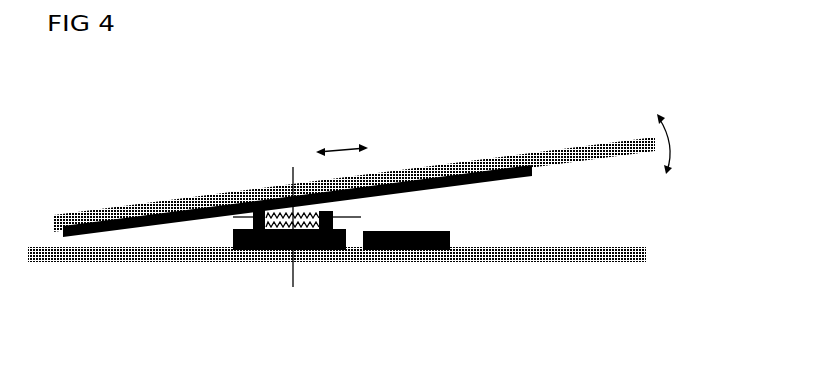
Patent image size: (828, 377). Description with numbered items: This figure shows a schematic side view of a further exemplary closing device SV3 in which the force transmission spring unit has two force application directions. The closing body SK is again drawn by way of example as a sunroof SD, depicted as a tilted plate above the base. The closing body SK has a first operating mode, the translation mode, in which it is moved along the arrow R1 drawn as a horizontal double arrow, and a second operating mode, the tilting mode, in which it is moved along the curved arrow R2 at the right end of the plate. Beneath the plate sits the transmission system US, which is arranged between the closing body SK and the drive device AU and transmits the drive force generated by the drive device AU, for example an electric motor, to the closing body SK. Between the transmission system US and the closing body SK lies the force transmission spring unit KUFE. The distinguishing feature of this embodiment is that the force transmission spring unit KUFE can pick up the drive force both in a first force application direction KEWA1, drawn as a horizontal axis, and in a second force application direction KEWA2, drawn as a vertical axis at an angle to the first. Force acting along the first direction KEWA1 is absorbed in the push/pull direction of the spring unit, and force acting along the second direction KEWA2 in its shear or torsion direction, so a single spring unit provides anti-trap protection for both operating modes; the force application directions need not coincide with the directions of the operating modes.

The closing device SV3 is at (481, 108).
The closing body SK is at (297, 194).
The sunroof SD is at (140, 216).
The force transmission spring unit KUFE is at (300, 204).
The second force application direction KEWA2 is at (292, 172).
The first force application direction KEWA1 is at (352, 213).
The arrow of translation mode R1 is at (339, 150).
The arrow of tilting mode R2 is at (675, 139).
The transmission system US is at (258, 252).
The drive device AU is at (393, 252).